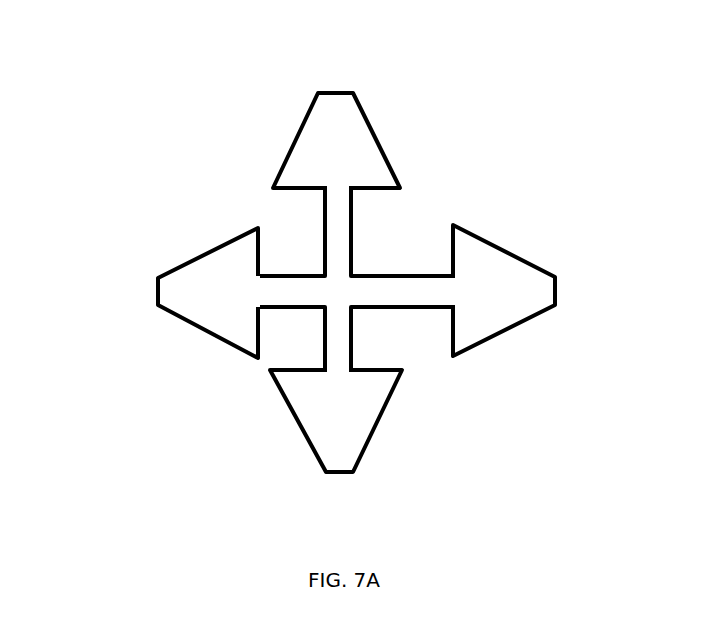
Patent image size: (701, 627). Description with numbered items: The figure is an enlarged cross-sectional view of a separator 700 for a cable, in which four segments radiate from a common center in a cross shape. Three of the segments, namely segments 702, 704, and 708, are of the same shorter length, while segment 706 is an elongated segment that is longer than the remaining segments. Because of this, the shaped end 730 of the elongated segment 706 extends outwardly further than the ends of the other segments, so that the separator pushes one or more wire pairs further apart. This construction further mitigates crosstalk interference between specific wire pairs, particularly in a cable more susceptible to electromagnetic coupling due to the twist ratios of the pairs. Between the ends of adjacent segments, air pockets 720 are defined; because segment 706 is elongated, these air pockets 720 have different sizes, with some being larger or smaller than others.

The separator 700 is at (367, 270).
The segment 702 is at (255, 273).
The segment 704 is at (314, 239).
The elongated segment 706 is at (407, 316).
The segment 708 is at (309, 342).
The air pocket 720 is at (424, 199).
The shaped end 730 is at (317, 126).